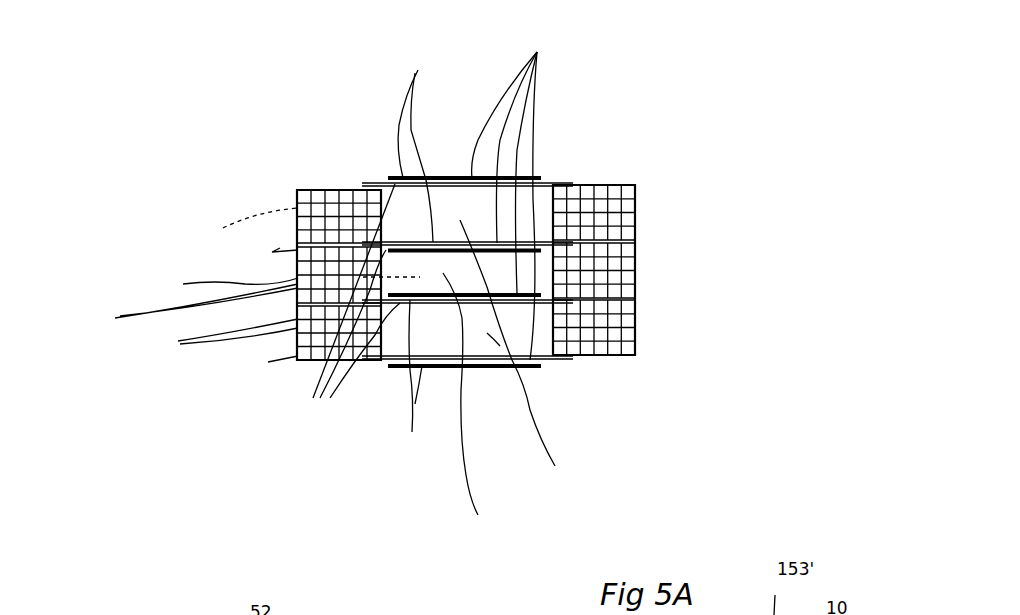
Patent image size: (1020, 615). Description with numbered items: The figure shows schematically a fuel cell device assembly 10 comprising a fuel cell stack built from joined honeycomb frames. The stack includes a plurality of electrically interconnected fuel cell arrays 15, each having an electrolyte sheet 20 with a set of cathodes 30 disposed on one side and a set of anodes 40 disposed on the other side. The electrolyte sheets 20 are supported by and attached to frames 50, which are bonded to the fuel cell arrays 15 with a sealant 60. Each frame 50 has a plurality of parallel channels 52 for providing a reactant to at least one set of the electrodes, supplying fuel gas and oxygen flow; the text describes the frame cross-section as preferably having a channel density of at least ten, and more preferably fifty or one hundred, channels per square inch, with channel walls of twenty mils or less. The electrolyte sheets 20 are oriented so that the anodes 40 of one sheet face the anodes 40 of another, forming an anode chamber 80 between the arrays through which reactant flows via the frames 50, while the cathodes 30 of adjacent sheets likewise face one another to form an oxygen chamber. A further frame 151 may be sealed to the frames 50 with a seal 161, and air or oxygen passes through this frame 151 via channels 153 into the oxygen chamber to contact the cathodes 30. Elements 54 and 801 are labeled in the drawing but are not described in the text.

The fuel cell device assembly 10 is at (707, 54).
The fuel cell array 15 is at (313, 398).
The electrolyte sheet 20 is at (371, 180).
The cathodes 30 is at (517, 196).
The anodes 40 is at (423, 261).
The frame 50 is at (640, 305).
The parallel channels 52 is at (628, 336).
The connection lines 54 is at (226, 340).
The sealant 60 is at (353, 183).
The anode chamber 80 is at (519, 362).
The lead 801 is at (477, 403).
The frame 151 is at (215, 288).
The channels 153 is at (246, 305).
The seal 161 is at (260, 237).